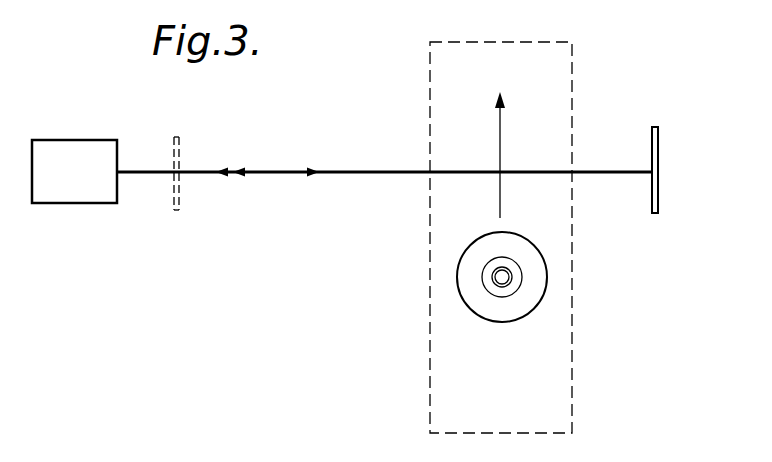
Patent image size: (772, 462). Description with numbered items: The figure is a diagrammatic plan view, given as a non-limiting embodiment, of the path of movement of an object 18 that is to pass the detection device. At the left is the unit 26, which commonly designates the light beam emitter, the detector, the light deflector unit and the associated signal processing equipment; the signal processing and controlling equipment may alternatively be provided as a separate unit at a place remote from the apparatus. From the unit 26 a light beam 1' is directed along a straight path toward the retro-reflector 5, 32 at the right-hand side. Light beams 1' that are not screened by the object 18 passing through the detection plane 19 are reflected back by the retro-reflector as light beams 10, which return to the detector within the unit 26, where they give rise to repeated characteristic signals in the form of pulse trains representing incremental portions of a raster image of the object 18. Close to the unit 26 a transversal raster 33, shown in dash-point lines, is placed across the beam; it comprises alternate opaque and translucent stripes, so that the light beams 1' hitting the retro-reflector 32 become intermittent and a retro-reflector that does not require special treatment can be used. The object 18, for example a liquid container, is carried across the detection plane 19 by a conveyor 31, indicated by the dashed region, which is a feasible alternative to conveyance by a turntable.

The light beams 10 is at (230, 160).
The light beam 1' is at (311, 136).
The unit 26 is at (86, 190).
The transversal raster 33 is at (181, 146).
The detection plane 19 is at (402, 197).
The conveyor 31 is at (552, 398).
The object 18 is at (533, 278).
The retro-reflector 5 is at (659, 148).
The retro-reflector 32 is at (655, 170).